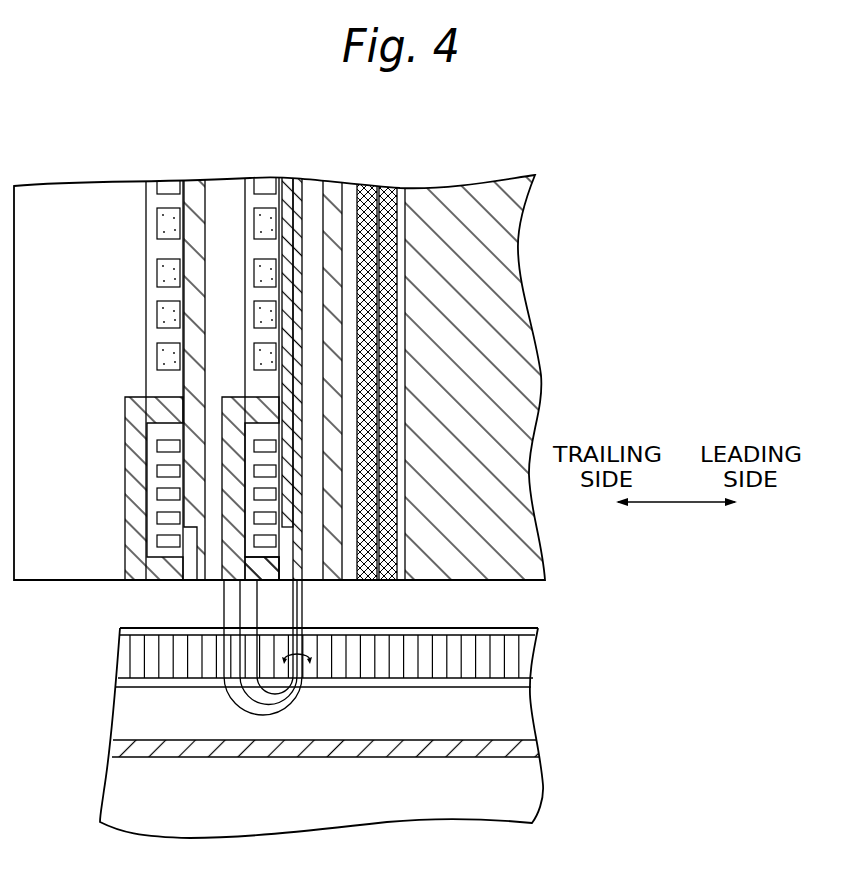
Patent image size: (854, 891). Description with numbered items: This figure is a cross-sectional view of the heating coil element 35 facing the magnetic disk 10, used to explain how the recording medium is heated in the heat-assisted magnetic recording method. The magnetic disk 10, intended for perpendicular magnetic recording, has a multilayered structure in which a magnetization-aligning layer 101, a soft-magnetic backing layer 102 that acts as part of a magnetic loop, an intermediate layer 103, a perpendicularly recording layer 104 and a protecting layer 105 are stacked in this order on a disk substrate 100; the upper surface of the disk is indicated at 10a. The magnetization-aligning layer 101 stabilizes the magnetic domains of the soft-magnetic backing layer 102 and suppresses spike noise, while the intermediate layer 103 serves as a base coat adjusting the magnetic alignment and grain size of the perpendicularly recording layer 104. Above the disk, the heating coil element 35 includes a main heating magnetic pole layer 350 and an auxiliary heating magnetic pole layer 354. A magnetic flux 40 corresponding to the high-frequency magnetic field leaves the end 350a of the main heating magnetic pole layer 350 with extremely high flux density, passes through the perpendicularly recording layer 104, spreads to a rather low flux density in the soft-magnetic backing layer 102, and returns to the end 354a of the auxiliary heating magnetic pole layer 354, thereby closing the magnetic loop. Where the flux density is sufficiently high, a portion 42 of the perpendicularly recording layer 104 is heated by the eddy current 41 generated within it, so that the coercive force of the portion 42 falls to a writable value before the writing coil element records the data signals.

The heating coil element 35 is at (318, 364).
The main heating magnetic pole layer 350 is at (287, 451).
The end of the main heating magnetic pole layer 350a is at (302, 552).
The auxiliary heating magnetic pole layer 354 is at (222, 504).
The end of the auxiliary heating magnetic pole layer 354a is at (233, 564).
The magnetic flux 40 is at (241, 694).
The eddy current 41 is at (309, 660).
The portion of the perpendicularly recording layer 42 is at (297, 650).
The magnetic disk 10 is at (393, 719).
The substrate surface 10a is at (510, 627).
The disk substrate 100 is at (523, 792).
The magnetization-aligning layer 101 is at (370, 761).
The soft-magnetic backing layer 102 is at (520, 713).
The intermediate layer 103 is at (520, 681).
The perpendicularly recording layer 104 is at (520, 656).
The protecting layer 105 is at (530, 631).